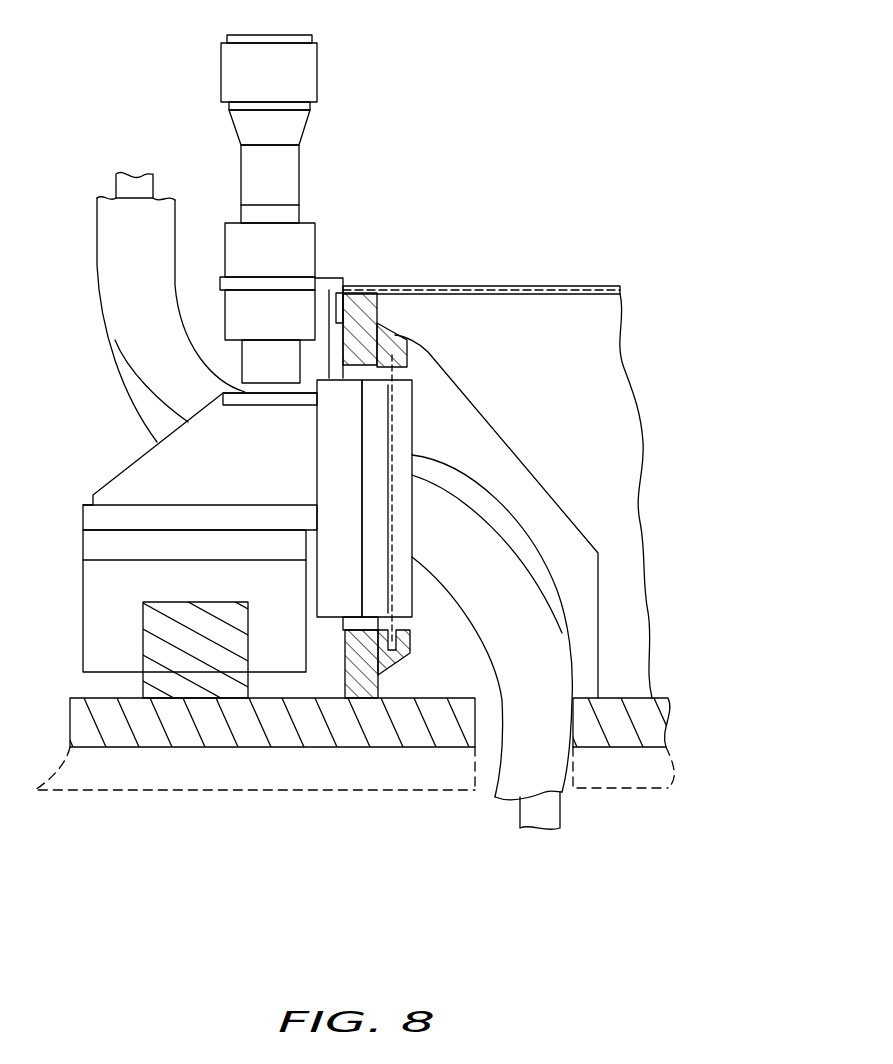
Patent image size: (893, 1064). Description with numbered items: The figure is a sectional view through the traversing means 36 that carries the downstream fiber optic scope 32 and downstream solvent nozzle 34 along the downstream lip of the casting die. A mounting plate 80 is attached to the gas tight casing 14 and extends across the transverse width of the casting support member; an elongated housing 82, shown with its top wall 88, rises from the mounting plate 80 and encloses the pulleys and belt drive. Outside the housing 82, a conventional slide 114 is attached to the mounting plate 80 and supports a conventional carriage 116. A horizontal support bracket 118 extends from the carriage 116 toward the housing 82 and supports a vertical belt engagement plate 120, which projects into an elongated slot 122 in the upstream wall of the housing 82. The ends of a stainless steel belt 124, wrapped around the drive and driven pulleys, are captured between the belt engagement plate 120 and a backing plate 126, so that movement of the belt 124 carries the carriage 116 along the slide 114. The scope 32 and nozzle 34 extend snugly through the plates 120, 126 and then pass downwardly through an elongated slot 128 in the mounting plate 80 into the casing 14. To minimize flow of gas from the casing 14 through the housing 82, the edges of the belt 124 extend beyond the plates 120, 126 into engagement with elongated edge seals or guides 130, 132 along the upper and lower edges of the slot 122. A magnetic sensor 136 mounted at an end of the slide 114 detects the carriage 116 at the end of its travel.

The casing 14 is at (197, 776).
The downstream fiber optic scope 32 is at (110, 222).
The downstream solvent nozzle 34 is at (157, 184).
The traversing means 36 is at (135, 443).
The mounting plate 80 is at (280, 730).
The elongated housing 82 is at (593, 370).
The top wall 88 is at (542, 287).
The slide 114 is at (150, 643).
The carriage 116 is at (113, 580).
The horizontal support bracket 118 is at (200, 487).
The belt engagement plate 120 is at (332, 444).
The elongated slot 122 is at (372, 378).
The stainless steel belt 124 is at (413, 462).
The backing plate 126 is at (400, 535).
The elongated slot 128 is at (585, 722).
The upper edge seal 130 is at (395, 342).
The lower edge seal 132 is at (405, 665).
The magnetic sensor 136 is at (302, 83).